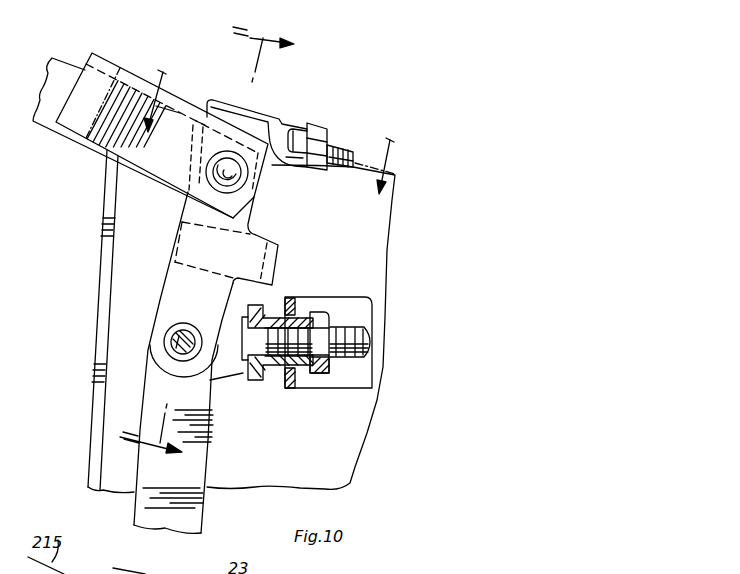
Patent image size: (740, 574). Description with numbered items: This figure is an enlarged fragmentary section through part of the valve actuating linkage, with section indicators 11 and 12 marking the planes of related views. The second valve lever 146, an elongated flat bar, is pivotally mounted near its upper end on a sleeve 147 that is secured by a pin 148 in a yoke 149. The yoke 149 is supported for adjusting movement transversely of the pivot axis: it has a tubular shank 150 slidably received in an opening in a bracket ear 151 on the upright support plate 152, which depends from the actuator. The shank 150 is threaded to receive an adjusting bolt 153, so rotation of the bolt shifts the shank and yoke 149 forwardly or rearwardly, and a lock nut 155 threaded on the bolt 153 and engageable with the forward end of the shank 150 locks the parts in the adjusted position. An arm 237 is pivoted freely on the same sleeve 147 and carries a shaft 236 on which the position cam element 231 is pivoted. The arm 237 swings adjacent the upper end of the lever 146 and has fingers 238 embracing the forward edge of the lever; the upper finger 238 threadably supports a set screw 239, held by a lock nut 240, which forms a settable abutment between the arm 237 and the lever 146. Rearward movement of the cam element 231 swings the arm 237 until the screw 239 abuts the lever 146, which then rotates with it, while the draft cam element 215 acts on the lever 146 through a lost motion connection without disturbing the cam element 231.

The position cam element 231 is at (105, 62).
The draft cam element 215 is at (47, 115).
The second valve lever 146 is at (276, 124).
The fingers 238 is at (279, 258).
The set screw 239 is at (345, 152).
The lock nut 240 is at (305, 169).
The shaft 236 is at (215, 176).
The arm 237 is at (177, 273).
The pin 148 is at (186, 335).
The sleeve 147 is at (186, 360).
The yoke 149 is at (234, 374).
The tubular shank 150 is at (307, 365).
The bracket ear 151 is at (289, 297).
The adjusting bolt 153 is at (364, 334).
The lock nut 155 is at (326, 317).
The upright support plate 152 is at (363, 423).
The section line 12 is at (269, 151).
The section line 11 is at (207, 256).